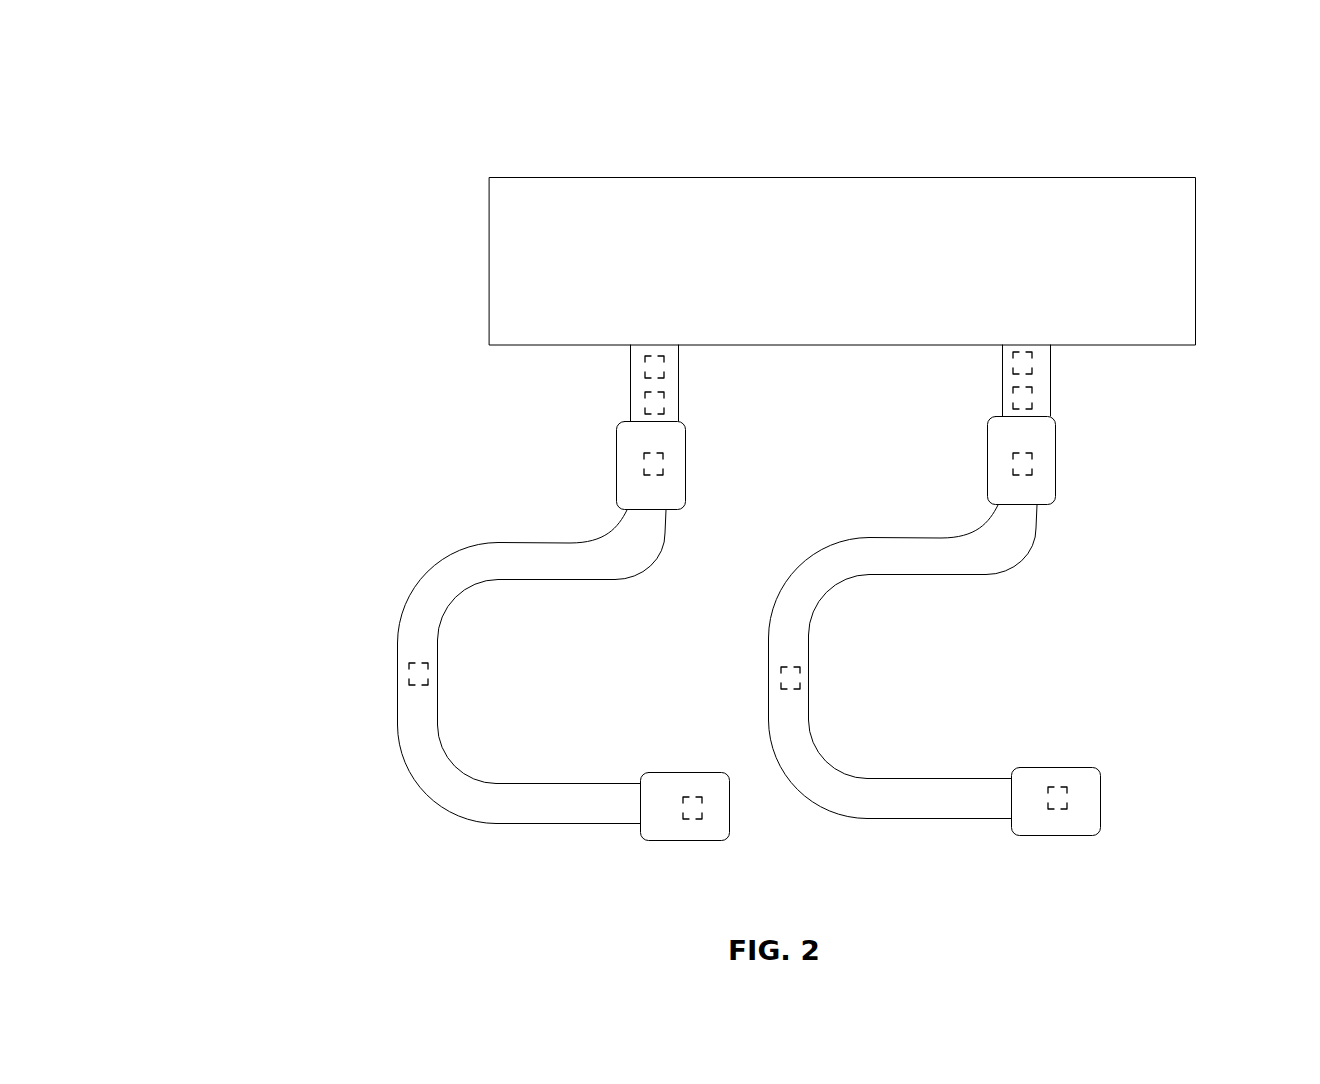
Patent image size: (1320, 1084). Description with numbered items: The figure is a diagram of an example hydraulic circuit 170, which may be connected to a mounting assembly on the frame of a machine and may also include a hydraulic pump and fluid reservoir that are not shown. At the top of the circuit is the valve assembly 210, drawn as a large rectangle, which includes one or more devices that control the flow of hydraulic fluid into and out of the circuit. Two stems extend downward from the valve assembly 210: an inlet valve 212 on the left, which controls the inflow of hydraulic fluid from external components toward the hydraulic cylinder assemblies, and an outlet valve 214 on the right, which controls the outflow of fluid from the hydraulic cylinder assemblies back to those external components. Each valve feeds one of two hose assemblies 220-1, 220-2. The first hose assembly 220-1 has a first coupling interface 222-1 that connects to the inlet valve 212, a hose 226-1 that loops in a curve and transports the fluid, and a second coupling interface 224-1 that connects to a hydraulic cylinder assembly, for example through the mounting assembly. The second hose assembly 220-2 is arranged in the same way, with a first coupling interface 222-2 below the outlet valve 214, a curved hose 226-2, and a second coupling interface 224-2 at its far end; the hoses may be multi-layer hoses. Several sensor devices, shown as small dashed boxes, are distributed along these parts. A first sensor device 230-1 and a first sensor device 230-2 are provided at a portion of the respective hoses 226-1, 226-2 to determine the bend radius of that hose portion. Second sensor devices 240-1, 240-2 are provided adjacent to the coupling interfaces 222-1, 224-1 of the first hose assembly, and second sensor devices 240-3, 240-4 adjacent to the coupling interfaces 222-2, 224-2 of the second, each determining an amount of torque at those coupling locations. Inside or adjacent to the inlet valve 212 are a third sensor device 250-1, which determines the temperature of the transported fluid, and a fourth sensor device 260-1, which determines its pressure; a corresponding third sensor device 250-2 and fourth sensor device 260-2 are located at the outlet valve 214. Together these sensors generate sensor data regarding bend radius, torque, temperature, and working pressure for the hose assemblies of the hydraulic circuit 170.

The hydraulic circuit 170 is at (276, 63).
The valve assembly 210 is at (800, 141).
The inlet valve 212 is at (630, 388).
The outlet valve 214 is at (1050, 367).
The hose assembly 220-1 is at (328, 587).
The hose assembly 220-2 is at (1124, 611).
The first coupling interface 222-1 is at (617, 502).
The first coupling interface 222-2 is at (988, 500).
The second coupling interface 224-1 is at (648, 772).
The second coupling interface 224-2 is at (1012, 768).
The hose 226-1 is at (424, 579).
The hose 226-2 is at (767, 645).
The first sensor device 230-1 is at (428, 668).
The first sensor device 230-2 is at (800, 670).
The second sensor device 240-1 is at (660, 456).
The second sensor device 240-2 is at (702, 808).
The second sensor device 240-3 is at (1030, 473).
The second sensor device 240-4 is at (1067, 797).
The third sensor device 250-1 is at (660, 372).
The third sensor device 250-2 is at (1015, 368).
The fourth sensor device 260-1 is at (660, 408).
The fourth sensor device 260-2 is at (1015, 405).